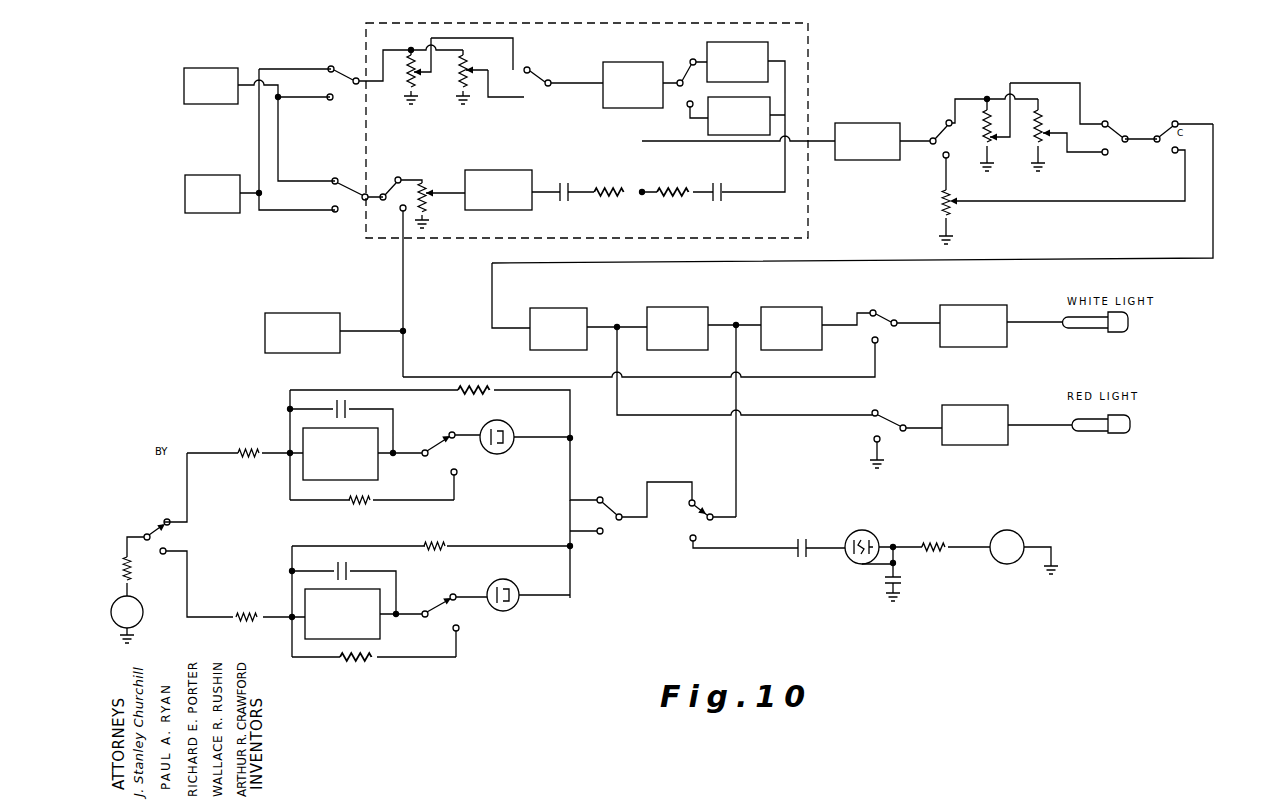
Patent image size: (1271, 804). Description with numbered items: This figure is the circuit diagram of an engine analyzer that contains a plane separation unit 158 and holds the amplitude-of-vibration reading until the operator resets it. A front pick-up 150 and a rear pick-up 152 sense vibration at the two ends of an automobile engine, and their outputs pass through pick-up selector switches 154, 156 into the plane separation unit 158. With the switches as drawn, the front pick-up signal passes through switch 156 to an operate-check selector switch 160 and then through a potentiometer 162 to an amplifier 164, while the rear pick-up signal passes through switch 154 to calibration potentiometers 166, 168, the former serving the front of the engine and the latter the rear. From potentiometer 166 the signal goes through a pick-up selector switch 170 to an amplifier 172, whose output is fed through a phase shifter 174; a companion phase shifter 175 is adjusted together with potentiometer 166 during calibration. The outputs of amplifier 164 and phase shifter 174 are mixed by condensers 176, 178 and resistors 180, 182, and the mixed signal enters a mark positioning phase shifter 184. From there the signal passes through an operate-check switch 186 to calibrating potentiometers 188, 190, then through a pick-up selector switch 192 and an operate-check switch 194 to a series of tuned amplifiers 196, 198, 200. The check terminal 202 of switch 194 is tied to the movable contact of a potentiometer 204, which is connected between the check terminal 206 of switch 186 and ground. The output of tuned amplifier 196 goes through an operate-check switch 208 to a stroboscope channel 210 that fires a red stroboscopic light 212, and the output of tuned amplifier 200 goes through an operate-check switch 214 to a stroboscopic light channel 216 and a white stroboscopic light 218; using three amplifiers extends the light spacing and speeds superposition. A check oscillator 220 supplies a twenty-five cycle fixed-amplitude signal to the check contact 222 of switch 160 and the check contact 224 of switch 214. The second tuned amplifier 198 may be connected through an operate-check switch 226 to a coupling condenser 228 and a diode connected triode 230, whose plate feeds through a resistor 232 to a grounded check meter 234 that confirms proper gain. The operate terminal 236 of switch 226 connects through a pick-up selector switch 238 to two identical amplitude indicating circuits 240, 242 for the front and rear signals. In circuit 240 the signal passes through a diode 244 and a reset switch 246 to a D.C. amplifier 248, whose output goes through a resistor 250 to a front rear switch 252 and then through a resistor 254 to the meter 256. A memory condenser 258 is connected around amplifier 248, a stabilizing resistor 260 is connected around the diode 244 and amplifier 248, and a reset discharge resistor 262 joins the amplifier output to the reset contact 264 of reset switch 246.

The front pick-up 150 is at (206, 104).
The rear pick-up 152 is at (215, 175).
The pick-up selector switch 154 is at (339, 63).
The pick-up selector switch 156 is at (345, 213).
The plane separation unit 158 is at (534, 25).
The operate-check selector switch 160 is at (400, 177).
The potentiometer 162 is at (428, 183).
The amplifier 164 is at (496, 201).
The calibration potentiometer 166 is at (408, 74).
The calibration potentiometer 168 is at (471, 86).
The pick-up selector switch 170 is at (548, 70).
The amplifier 172 is at (640, 62).
The phase shifter 174 is at (770, 50).
The phase shifter 175 is at (770, 102).
The condenser 176 is at (578, 199).
The condenser 178 is at (724, 197).
The resistor 180 is at (612, 197).
The resistor 182 is at (670, 197).
The mark positioning phase shifter 184 is at (876, 123).
The operate-check switch 186 is at (941, 133).
The calibrating potentiometer 188 is at (984, 137).
The calibrating potentiometer 190 is at (1048, 150).
The pick-up selector switch 192 is at (1114, 134).
The operate-check switch 194 is at (1163, 146).
The tuned amplifier 196 is at (566, 308).
The tuned amplifier 198 is at (680, 307).
The tuned amplifier 200 is at (795, 307).
The check terminal 202 is at (1178, 150).
The potentiometer 204 is at (958, 206).
The check terminal 206 is at (943, 155).
The operate-check switch 208 is at (890, 418).
The stroboscope channel 210 is at (987, 445).
The red stroboscopic light 212 is at (1090, 432).
The operate-check switch 214 is at (882, 308).
The stroboscopic light channel 216 is at (985, 305).
The white stroboscopic light 218 is at (1092, 329).
The check oscillator 220 is at (303, 313).
The check contact 222 is at (401, 214).
The check contact 224 is at (873, 342).
The operate-check switch 226 is at (704, 495).
The coupling condenser 228 is at (806, 538).
The diode connected triode 230 is at (870, 532).
The resistor 232 is at (939, 538).
The check meter 234 is at (1022, 538).
The operate terminal 236 is at (690, 506).
The pick-up selector switch 238 is at (612, 495).
The amplitude indicating circuit 240 is at (417, 460).
The amplitude indicating circuit 242 is at (285, 628).
The diode 244 is at (510, 428).
The reset switch 246 is at (444, 442).
The D.C. amplifier 248 is at (380, 470).
The resistor 250 is at (246, 458).
The front rear switch 252 is at (152, 530).
The resistor 254 is at (133, 570).
The meter 256 is at (143, 606).
The memory condenser 258 is at (347, 406).
The stabilizing resistor 260 is at (470, 392).
The reset discharge resistor 262 is at (361, 503).
The reset contact 264 is at (458, 478).